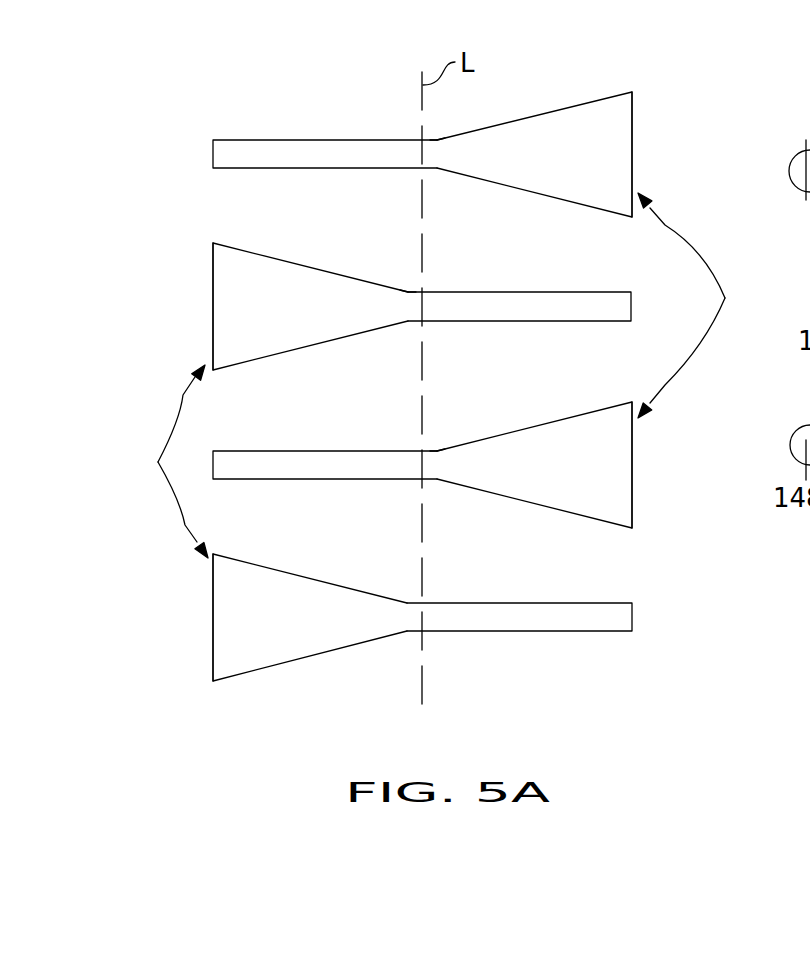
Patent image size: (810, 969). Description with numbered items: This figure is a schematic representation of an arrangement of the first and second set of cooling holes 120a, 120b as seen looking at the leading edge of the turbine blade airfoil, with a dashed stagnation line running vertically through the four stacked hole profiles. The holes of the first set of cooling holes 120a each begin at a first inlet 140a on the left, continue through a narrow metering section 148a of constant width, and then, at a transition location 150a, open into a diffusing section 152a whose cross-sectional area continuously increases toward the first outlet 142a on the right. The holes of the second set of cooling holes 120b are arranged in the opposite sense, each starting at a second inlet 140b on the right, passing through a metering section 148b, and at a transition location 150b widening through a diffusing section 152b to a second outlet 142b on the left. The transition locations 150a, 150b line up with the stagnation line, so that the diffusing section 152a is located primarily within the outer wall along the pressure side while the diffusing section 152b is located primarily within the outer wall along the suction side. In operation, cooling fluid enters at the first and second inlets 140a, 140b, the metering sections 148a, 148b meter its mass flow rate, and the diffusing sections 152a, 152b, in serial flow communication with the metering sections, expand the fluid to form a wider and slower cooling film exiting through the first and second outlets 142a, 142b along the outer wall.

The first set of cooling holes 120a is at (718, 305).
The second set of cooling holes 120b is at (150, 461).
The first inlet 140a is at (414, 308).
The second inlet 140b is at (375, 447).
The first outlet 142a is at (632, 128).
The second outlet 142b is at (213, 272).
The metering section 148a is at (300, 150).
The metering section 148b is at (545, 305).
The transition location 150a is at (437, 140).
The transition location 150b is at (408, 292).
The diffusing section 152a is at (498, 122).
The diffusing section 152b is at (262, 265).